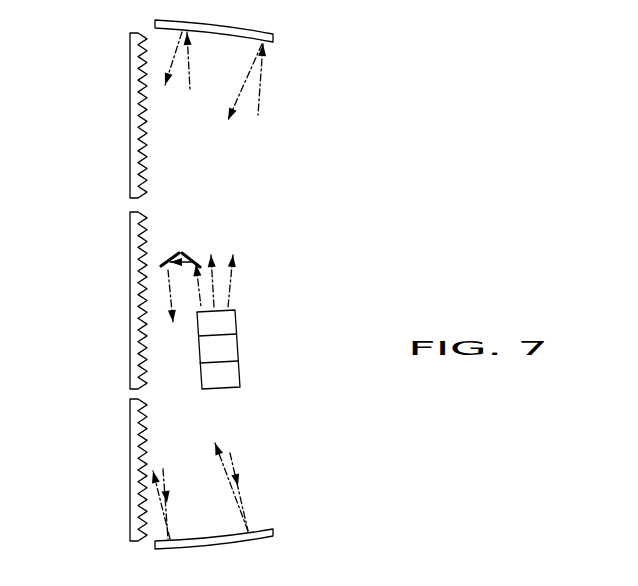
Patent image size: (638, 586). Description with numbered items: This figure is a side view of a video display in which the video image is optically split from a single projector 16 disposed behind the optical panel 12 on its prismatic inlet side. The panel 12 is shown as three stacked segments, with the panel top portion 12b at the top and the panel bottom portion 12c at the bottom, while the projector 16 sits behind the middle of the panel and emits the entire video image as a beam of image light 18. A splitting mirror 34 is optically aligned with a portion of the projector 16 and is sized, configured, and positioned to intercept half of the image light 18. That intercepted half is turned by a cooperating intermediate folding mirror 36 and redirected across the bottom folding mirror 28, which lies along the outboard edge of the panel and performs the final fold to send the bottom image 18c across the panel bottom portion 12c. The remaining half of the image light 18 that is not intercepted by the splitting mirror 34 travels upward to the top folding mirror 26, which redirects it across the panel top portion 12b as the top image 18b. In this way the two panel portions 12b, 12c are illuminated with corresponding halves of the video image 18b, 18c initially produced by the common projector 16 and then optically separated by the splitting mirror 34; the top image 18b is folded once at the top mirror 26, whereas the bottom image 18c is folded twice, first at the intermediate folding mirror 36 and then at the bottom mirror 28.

The optical panel 12 is at (127, 78).
The panel top portion 12b is at (129, 113).
The panel bottom portion 12c is at (129, 500).
The projector 16 is at (242, 343).
The image light 18 is at (233, 293).
The top image 18b is at (190, 90).
The bottom image 18c is at (199, 474).
The top folding mirror 26 is at (275, 37).
The bottom folding mirror 28 is at (278, 530).
The splitting mirror 34 is at (188, 253).
The intermediate folding mirror 36 is at (172, 257).